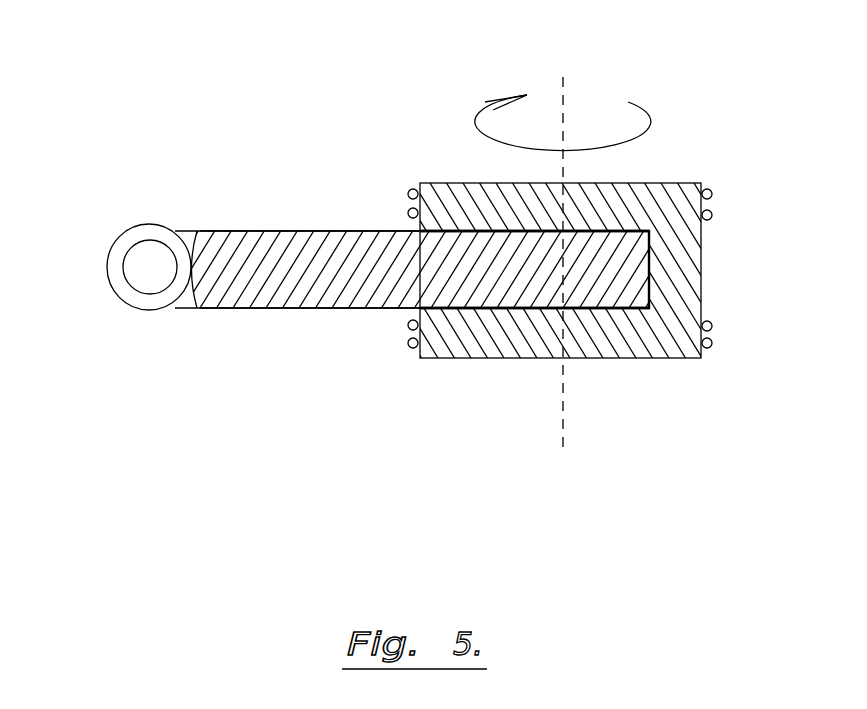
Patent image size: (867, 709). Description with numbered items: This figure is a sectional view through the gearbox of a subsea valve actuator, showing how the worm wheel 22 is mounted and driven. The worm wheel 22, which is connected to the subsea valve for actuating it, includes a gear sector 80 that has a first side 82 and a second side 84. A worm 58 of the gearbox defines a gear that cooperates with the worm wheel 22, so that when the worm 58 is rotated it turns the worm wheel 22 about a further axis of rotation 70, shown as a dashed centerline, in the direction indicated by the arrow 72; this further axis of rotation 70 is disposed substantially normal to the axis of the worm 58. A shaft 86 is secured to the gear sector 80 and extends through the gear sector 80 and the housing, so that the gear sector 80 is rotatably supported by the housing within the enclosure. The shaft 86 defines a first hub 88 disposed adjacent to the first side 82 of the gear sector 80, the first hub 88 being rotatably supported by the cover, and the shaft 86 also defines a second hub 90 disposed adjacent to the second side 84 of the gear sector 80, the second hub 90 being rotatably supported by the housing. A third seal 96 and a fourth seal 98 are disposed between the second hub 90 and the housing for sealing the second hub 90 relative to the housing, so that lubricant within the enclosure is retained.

The worm wheel 22 is at (340, 293).
The worm 58 is at (147, 278).
The further axis of rotation 70 is at (563, 100).
The arrow 72 is at (633, 138).
The gear sector 80 is at (242, 252).
The first side 82 is at (343, 296).
The second side 84 is at (250, 305).
The shaft 86 is at (668, 200).
The first hub 88 is at (482, 215).
The second hub 90 is at (617, 340).
The third seal 96 is at (703, 323).
The fourth seal 98 is at (707, 347).